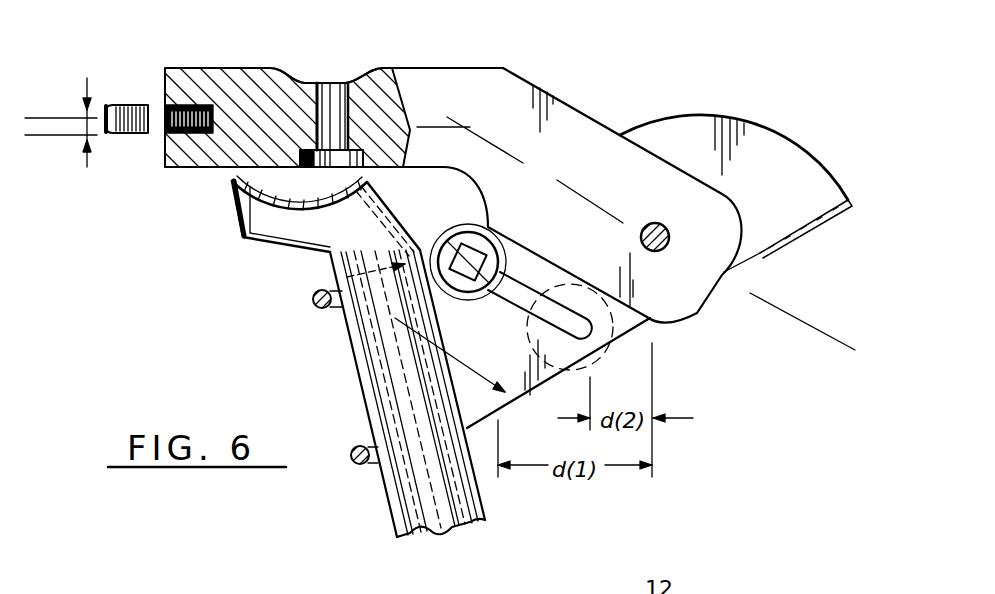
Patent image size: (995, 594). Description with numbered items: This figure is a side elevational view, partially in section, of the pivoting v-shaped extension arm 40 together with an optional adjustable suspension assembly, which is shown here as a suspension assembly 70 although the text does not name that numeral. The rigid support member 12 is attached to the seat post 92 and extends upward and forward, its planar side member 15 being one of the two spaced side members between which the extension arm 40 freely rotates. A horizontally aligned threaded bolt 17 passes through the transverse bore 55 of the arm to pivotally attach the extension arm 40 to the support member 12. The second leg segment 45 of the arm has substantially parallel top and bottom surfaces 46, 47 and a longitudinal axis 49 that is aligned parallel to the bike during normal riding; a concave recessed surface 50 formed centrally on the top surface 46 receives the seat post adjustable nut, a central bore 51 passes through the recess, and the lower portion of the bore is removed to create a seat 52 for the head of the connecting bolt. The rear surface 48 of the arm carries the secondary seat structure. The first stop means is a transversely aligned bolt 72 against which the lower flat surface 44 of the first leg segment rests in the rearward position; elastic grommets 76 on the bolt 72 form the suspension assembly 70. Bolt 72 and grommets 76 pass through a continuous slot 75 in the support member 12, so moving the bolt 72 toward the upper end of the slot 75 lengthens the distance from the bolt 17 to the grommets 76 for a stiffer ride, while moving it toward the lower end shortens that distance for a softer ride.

The rigid support member 12 is at (793, 130).
The side member 15 is at (687, 113).
The threaded bolt 17 is at (669, 236).
The extension arm 40 is at (562, 70).
The lower flat surface 44 is at (697, 314).
The second leg segment 45 is at (207, 66).
The top surface 46 is at (447, 68).
The bottom surface 47 is at (187, 168).
The rear surface 48 is at (163, 73).
The longitudinal axis 49 is at (73, 133).
The concave recessed surface 50 is at (300, 82).
The bore 51 is at (341, 82).
The seat 52 is at (233, 203).
The bore 55 is at (669, 243).
The handle tube 70 is at (493, 310).
The bolt 72 is at (466, 253).
The continuous slot 75 is at (568, 318).
The grommet 76 is at (562, 314).
The seat post 92 is at (410, 488).